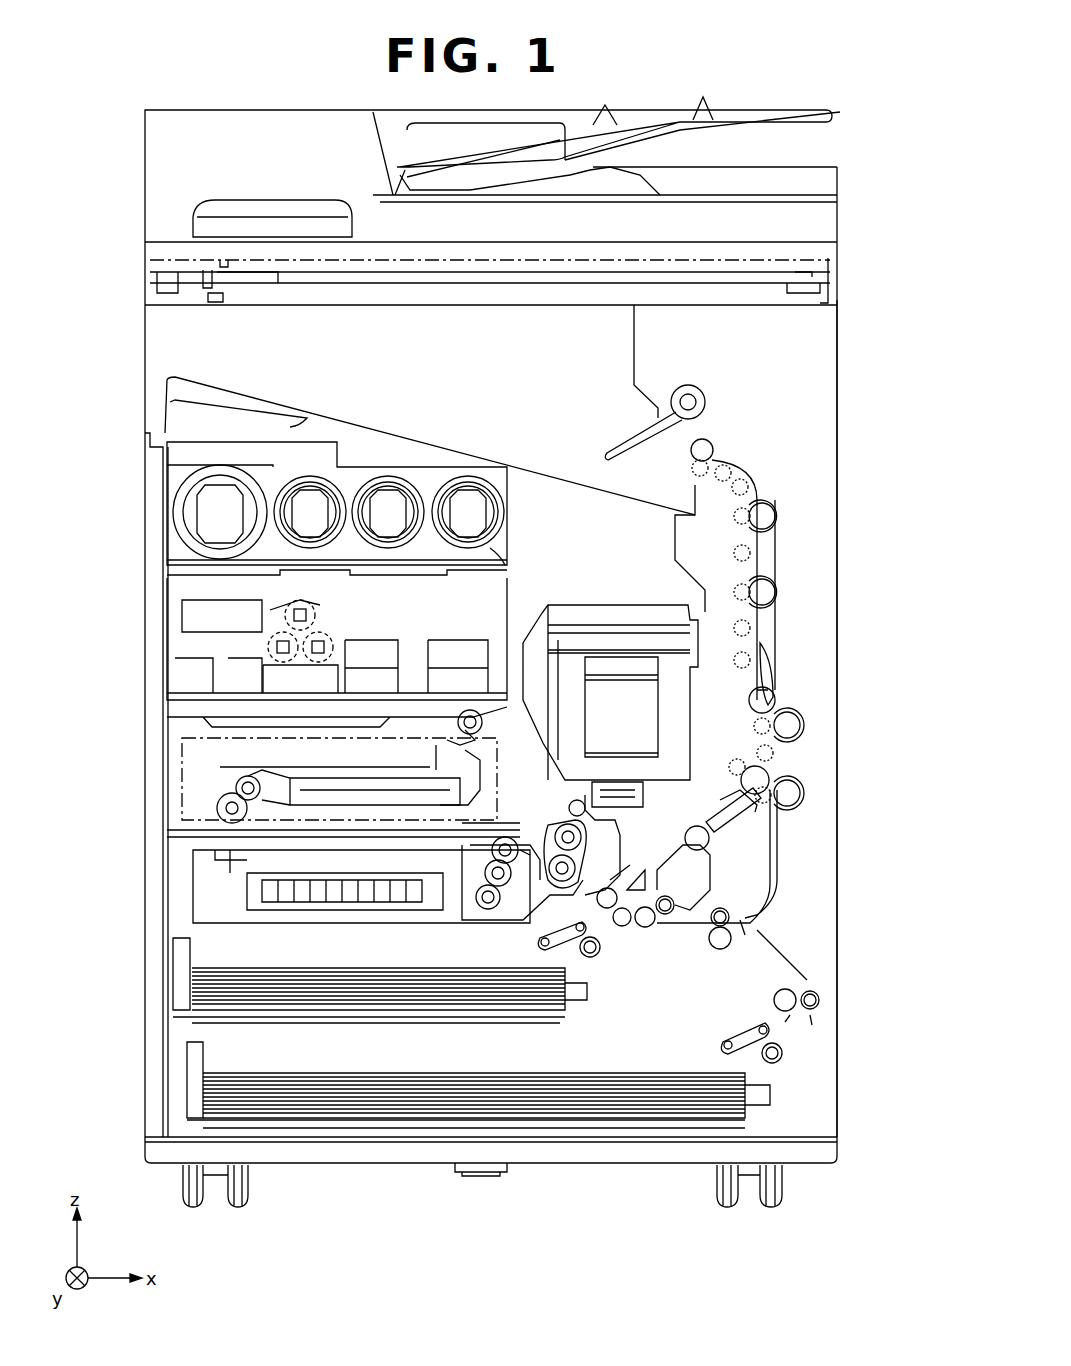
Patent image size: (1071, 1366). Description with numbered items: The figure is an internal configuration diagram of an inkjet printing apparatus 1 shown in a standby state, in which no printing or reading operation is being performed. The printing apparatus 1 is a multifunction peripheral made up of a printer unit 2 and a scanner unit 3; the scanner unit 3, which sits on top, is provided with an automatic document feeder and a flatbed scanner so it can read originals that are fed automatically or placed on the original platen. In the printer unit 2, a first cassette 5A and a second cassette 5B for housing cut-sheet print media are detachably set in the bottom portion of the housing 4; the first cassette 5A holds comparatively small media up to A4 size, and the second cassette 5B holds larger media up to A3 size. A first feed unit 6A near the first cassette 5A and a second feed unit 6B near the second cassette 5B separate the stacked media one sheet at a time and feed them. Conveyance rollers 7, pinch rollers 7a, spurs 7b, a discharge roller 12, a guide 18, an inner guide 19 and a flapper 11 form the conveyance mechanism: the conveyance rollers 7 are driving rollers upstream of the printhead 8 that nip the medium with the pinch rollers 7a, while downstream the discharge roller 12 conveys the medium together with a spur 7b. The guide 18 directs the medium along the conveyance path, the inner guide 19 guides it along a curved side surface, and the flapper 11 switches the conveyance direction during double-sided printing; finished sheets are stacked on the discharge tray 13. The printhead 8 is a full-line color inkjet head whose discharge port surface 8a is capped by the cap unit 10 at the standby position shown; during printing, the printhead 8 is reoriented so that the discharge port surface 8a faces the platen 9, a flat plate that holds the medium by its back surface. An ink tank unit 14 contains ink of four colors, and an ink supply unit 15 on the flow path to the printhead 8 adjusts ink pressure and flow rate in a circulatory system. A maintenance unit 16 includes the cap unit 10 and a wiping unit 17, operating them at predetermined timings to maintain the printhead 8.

The inkjet printing apparatus 1 is at (790, 88).
The printer unit 2 is at (78, 312).
The scanner unit 3 is at (78, 111).
The housing 4 is at (838, 383).
The first cassette 5A is at (182, 990).
The second cassette 5B is at (193, 1093).
The first feed unit 6A is at (590, 958).
The second feed unit 6B is at (785, 1053).
The conveyance rollers 7 is at (790, 793).
The pinch rollers 7a is at (662, 915).
The spurs 7b is at (748, 470).
The printhead 8 is at (650, 712).
The discharge port surface 8a is at (775, 813).
The platen 9 is at (745, 820).
The cap unit 10 is at (708, 838).
The flapper 11 is at (770, 677).
The discharge roller 12 is at (712, 442).
The discharge tray 13 is at (433, 445).
The ink tank unit 14 is at (165, 466).
The ink supply unit 15 is at (175, 649).
The maintenance unit 16 is at (193, 882).
The wiping unit 17 is at (190, 760).
The guide 18 is at (765, 560).
The inner guide 19 is at (740, 890).